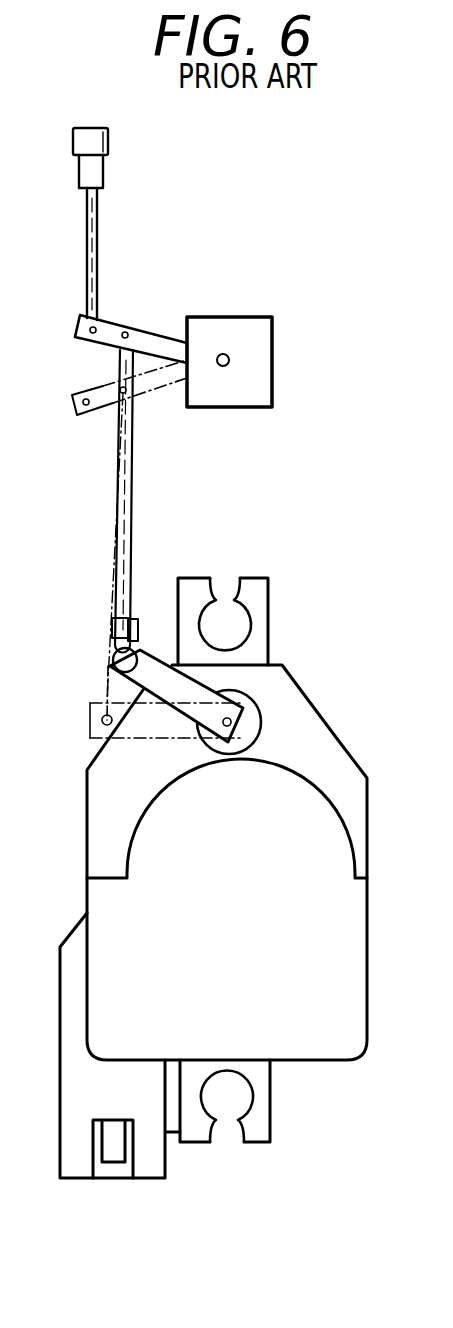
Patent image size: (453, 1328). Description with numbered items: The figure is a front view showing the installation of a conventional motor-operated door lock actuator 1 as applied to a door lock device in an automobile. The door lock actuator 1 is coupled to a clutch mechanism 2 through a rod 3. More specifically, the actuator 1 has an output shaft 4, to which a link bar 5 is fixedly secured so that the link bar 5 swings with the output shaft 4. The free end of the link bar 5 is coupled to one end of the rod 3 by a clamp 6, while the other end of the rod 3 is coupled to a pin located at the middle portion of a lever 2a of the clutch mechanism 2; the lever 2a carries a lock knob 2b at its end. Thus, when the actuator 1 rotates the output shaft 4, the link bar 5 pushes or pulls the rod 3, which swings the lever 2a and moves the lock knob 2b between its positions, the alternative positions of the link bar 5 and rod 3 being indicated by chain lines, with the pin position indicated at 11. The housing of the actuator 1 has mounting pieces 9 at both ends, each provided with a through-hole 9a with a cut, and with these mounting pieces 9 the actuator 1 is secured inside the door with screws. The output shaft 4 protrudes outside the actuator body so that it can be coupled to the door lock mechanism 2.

The door lock actuator 1 is at (343, 710).
The clutch mechanism 2 is at (228, 308).
The lever 2a is at (153, 333).
The lock knob 2b is at (92, 228).
The rod 3 is at (128, 478).
The output shaft 4 is at (258, 718).
The link bar 5 is at (152, 653).
The clamp 6 is at (110, 632).
The mounting pieces 9 is at (258, 590).
The through-hole 9a is at (223, 575).
The lever alternate position / pin 11 is at (200, 745).